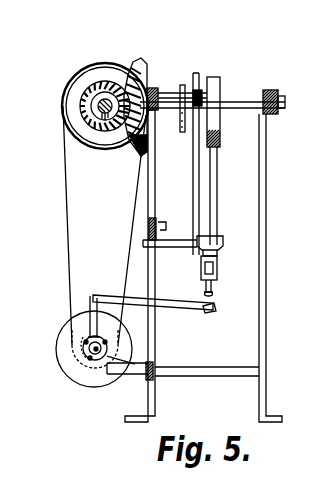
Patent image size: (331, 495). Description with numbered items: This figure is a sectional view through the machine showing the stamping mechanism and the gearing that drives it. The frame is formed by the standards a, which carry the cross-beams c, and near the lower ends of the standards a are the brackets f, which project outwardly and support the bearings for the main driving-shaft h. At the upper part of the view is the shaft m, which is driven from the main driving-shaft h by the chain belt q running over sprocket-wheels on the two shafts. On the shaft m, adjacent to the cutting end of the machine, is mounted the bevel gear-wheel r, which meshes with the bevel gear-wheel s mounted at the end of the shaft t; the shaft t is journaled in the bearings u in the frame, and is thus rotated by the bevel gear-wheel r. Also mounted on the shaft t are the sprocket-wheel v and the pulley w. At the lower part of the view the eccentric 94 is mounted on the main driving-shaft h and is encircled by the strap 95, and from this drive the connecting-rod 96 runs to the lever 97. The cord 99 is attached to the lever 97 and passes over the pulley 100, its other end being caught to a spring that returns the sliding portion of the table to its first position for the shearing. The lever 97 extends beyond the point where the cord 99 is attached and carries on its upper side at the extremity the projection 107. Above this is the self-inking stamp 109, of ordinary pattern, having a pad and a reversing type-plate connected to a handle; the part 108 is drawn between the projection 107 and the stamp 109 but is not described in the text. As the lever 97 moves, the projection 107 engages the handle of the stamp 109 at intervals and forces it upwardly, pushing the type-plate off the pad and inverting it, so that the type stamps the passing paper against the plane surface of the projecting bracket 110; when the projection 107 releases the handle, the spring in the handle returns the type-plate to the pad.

The standards a is at (153, 343).
The shaft m is at (98, 113).
The bevel gear-wheel r is at (107, 85).
The bevel gear-wheel s is at (139, 70).
The shaft t is at (170, 95).
The bearings u is at (266, 90).
The sprocket-wheel v is at (184, 86).
The pulley 100 is at (197, 90).
The cord 99 is at (193, 197).
The pulley w is at (218, 95).
The chain belt q is at (66, 197).
The cross-beams c is at (149, 228).
The projecting bracket 110 is at (223, 244).
The self-inking stamp 109 is at (217, 268).
The bolt 108 is at (213, 288).
The projection 107 is at (218, 308).
The lever 97 is at (103, 298).
The connecting-rod 96 is at (92, 302).
The brackets f is at (118, 360).
The main driving-shaft h is at (85, 355).
The strap 95 is at (88, 330).
The eccentric 94 is at (87, 344).